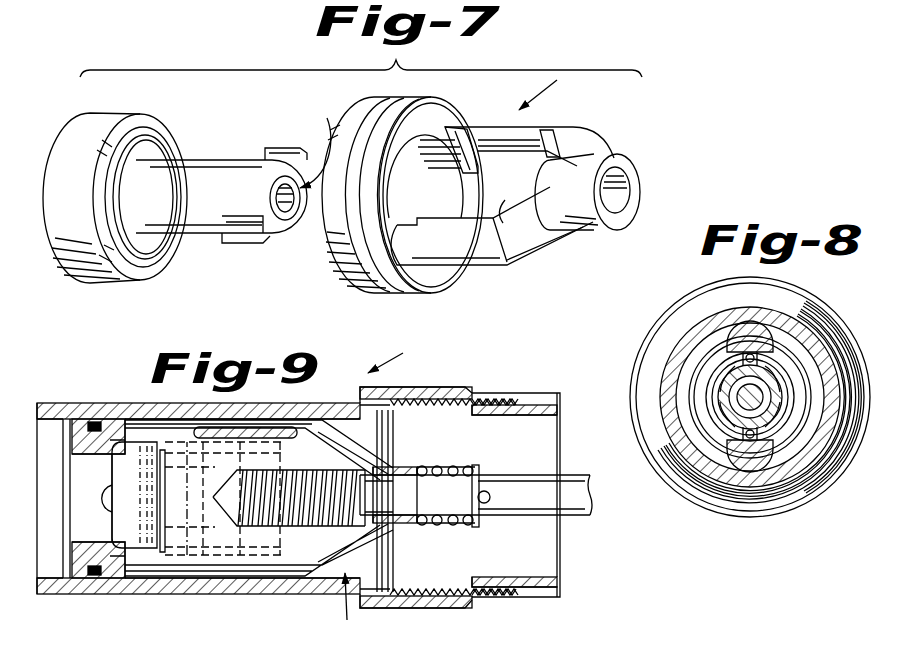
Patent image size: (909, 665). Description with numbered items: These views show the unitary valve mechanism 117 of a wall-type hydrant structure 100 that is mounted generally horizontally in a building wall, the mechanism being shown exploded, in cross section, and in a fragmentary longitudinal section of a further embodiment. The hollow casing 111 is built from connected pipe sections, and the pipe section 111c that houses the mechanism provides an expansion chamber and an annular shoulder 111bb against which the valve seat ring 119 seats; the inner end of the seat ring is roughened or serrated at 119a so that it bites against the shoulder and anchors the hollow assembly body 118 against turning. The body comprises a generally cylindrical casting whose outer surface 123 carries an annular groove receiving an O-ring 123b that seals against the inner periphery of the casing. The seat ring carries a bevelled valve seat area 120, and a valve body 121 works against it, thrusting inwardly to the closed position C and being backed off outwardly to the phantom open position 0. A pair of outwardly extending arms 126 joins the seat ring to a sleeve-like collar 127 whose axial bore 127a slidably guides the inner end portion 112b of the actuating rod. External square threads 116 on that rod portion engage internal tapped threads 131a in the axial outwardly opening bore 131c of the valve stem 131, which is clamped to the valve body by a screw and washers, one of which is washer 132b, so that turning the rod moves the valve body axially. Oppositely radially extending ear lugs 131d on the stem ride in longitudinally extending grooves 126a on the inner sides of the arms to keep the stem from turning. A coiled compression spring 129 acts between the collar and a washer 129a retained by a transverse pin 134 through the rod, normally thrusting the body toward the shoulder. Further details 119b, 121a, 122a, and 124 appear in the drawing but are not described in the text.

In FIG. 9, the hydrant structure 100 is at (405, 356).
In FIG. 8, the hollow casing 111 is at (710, 310).
In FIG. 9, the hollow casing 111 is at (85, 455).
In FIG. 9, the annular shoulder 111bb is at (67, 600).
In FIG. 8, the pipe section 111c is at (740, 505).
In FIG. 9, the pipe section 111c is at (213, 580).
In FIG. 9, the inner end portion of valve actuating rod 112b is at (520, 483).
In FIG. 8, the external square threads 116 is at (737, 399).
In FIG. 9, the external square threads 116 is at (323, 467).
In FIG. 7, the unitary valve mechanism 117 is at (555, 95).
In FIG. 9, the unitary valve mechanism 117 is at (362, 612).
In FIG. 9, the hollow assembly body 118 is at (375, 440).
In FIG. 9, the valve seat ring 119 is at (113, 485).
In FIG. 9, the roughened or serrated inner end 119a is at (87, 455).
In FIG. 9, the O-ring 119b is at (113, 420).
In FIG. 9, the bevelled valve seat area 120 is at (112, 520).
In FIG. 7, the valve body 121 is at (97, 123).
In FIG. 9, the valve body 121 is at (137, 553).
In FIG. 7, the knob bore 121a is at (150, 125).
In FIG. 9, the knob bore 121a is at (223, 498).
In FIG. 7, the ring flange 122a is at (430, 105).
In FIG. 8, the ring flange 122a is at (787, 455).
In FIG. 7, the outer surface of casting 123 is at (363, 110).
In FIG. 7, the O-ring 123b is at (357, 283).
In FIG. 7, the ring opening 124 is at (433, 147).
In FIG. 7, the outwardly extending arms 126 is at (543, 124).
In FIG. 8, the outwardly extending arms 126 is at (733, 333).
In FIG. 9, the outwardly extending arms 126 is at (315, 428).
In FIG. 7, the longitudinally extending grooves 126a is at (502, 220).
In FIG. 8, the longitudinally extending grooves 126a is at (767, 343).
In FIG. 7, the sleeve-like collar 127 is at (613, 230).
In FIG. 9, the sleeve-like collar 127 is at (407, 468).
In FIG. 7, the axial bore 127a is at (632, 183).
In FIG. 9, the coiled compression spring 129 is at (437, 525).
In FIG. 9, the washer 129a is at (478, 467).
In FIG. 7, the valve stem 131 is at (187, 204).
In FIG. 8, the valve stem 131 is at (718, 378).
In FIG. 7, the internal tapped threads 131a is at (300, 214).
In FIG. 7, the axial outwardly opening bore 131c is at (322, 140).
In FIG. 7, the ear lugs 131d is at (287, 150).
In FIG. 8, the ear lugs 131d is at (773, 353).
In FIG. 7, the washer 132b is at (166, 153).
In FIG. 9, the transverse pin 134 is at (487, 500).
In FIG. 9, the closed position C is at (147, 553).
In FIG. 9, the open position 0 is at (187, 555).